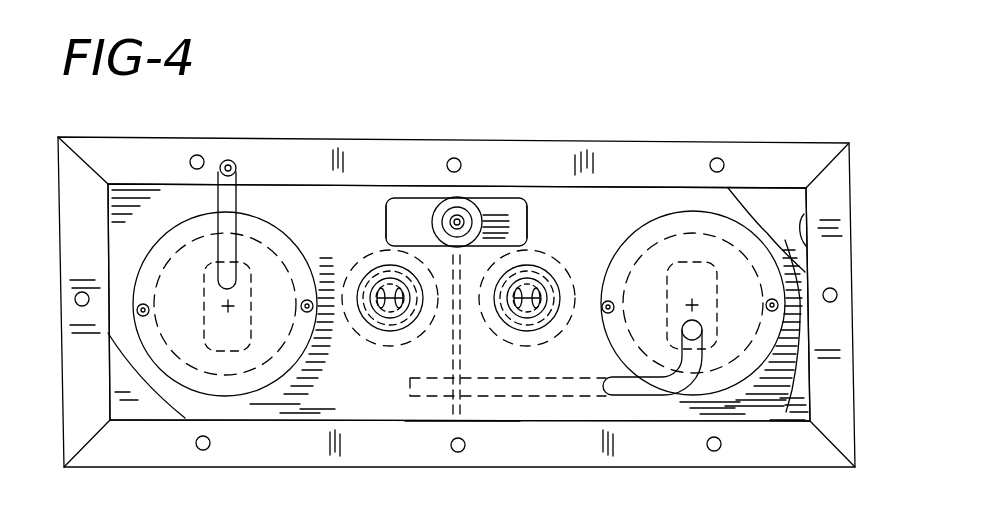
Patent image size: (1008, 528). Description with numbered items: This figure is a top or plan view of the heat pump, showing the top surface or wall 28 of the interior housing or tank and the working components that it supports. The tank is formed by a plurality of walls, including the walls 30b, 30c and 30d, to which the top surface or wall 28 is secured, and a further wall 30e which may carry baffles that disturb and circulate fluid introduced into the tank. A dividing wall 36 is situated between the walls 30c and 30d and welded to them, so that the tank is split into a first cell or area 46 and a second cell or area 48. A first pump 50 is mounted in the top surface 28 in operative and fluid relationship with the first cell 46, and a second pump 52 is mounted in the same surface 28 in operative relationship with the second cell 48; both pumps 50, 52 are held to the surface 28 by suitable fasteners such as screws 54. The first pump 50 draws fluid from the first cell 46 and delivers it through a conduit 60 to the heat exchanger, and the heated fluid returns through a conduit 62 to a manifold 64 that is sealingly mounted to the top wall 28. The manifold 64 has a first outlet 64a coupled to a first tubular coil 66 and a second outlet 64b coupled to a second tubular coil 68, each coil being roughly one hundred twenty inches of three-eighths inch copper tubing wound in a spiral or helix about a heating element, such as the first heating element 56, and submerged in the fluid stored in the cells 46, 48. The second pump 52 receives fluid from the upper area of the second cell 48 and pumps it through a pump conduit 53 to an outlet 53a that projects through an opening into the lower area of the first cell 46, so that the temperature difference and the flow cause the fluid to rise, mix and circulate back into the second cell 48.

The top surface or wall 28 is at (283, 405).
The wall 30b is at (141, 408).
The wall 30c is at (753, 193).
The wall 30d is at (803, 215).
The wall 30e is at (115, 366).
The dividing wall 36 is at (477, 352).
The first cell or area 46 is at (125, 400).
The second cell or area 48 is at (785, 208).
The first pump 50 is at (259, 205).
The second pump 52 is at (681, 194).
The pump conduit 53 is at (643, 384).
The outlet 53a is at (417, 392).
The screws 54 is at (140, 308).
The first heating element 56 is at (471, 483).
The conduit 60 is at (222, 212).
The conduit 62 is at (477, 211).
The manifold 64 is at (438, 181).
The first outlet 64a is at (406, 188).
The second outlet 64b is at (523, 198).
The first tubular coil 66 is at (372, 235).
The second tubular coil 68 is at (548, 225).